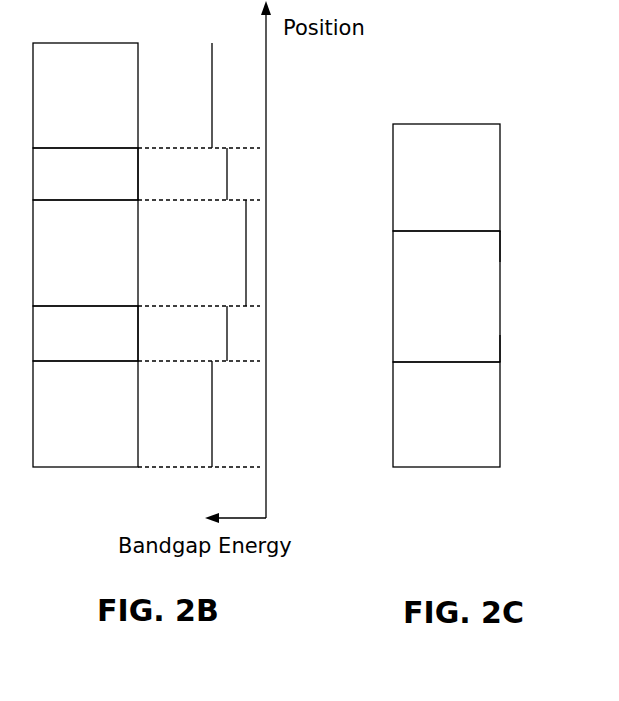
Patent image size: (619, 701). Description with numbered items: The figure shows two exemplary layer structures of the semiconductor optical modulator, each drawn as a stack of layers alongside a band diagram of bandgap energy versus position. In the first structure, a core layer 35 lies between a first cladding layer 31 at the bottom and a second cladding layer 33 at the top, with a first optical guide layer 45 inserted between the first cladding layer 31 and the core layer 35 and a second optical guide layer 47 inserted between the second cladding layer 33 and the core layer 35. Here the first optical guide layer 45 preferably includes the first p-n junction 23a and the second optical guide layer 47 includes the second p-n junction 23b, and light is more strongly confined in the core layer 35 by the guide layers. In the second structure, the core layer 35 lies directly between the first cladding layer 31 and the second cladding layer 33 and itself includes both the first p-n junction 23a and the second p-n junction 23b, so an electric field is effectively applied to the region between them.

In FIG. 2B, the first cladding layer 31 is at (138, 447).
In FIG. 2C, the first cladding layer 31 is at (393, 440).
In FIG. 2B, the second cladding layer 33 is at (138, 65).
In FIG. 2C, the second cladding layer 33 is at (393, 168).
In FIG. 2B, the core layer 35 is at (138, 252).
In FIG. 2C, the core layer 35 is at (393, 276).
In FIG. 2B, the first optical guide layer 45 is at (138, 347).
In FIG. 2B, the second optical guide layer 47 is at (138, 163).
In FIG. 2B, the first p-n junction 23a is at (177, 333).
In FIG. 2C, the first p-n junction 23a is at (553, 348).
In FIG. 2B, the second p-n junction 23b is at (177, 174).
In FIG. 2C, the second p-n junction 23b is at (554, 246).